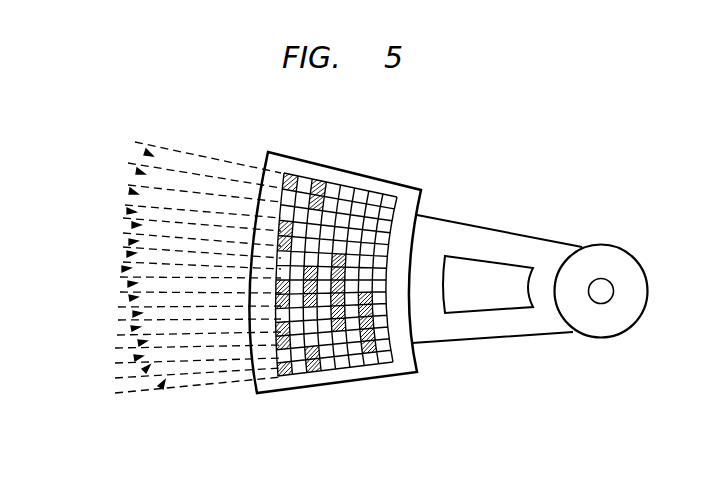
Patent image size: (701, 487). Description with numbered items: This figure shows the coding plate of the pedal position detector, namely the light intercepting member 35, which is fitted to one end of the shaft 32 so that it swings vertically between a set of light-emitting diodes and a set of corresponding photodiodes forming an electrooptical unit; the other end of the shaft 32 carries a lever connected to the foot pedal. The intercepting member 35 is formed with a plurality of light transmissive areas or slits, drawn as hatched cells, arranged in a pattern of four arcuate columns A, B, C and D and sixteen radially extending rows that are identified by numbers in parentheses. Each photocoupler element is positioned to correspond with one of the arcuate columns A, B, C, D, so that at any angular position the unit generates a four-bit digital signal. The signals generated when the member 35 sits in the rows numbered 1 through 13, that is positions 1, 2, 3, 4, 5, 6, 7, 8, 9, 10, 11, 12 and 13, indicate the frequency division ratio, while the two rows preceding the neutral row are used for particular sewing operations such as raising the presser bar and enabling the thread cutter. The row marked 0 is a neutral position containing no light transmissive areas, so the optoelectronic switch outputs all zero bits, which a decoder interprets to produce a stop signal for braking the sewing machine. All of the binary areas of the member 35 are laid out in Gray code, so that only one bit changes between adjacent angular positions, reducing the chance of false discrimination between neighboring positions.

The light intercepting member 35 is at (359, 294).
The shaft 32 is at (597, 338).
The arcuate column A is at (383, 370).
The arcuate column B is at (348, 372).
The arcuate column C is at (317, 370).
The arcuate column D is at (285, 378).
The neutral angular position 0 is at (129, 191).
The angular position 1 is at (127, 211).
The angular position 2 is at (132, 225).
The angular position 3 is at (129, 242).
The angular position 4 is at (127, 254).
The angular position 5 is at (122, 269).
The angular position 6 is at (128, 284).
The angular position 7 is at (129, 298).
The angular position 8 is at (133, 314).
The angular position 9 is at (131, 329).
The angular position 10 is at (138, 343).
The angular position 11 is at (134, 358).
The angular position 12 is at (144, 371).
The angular position 13 is at (160, 387).